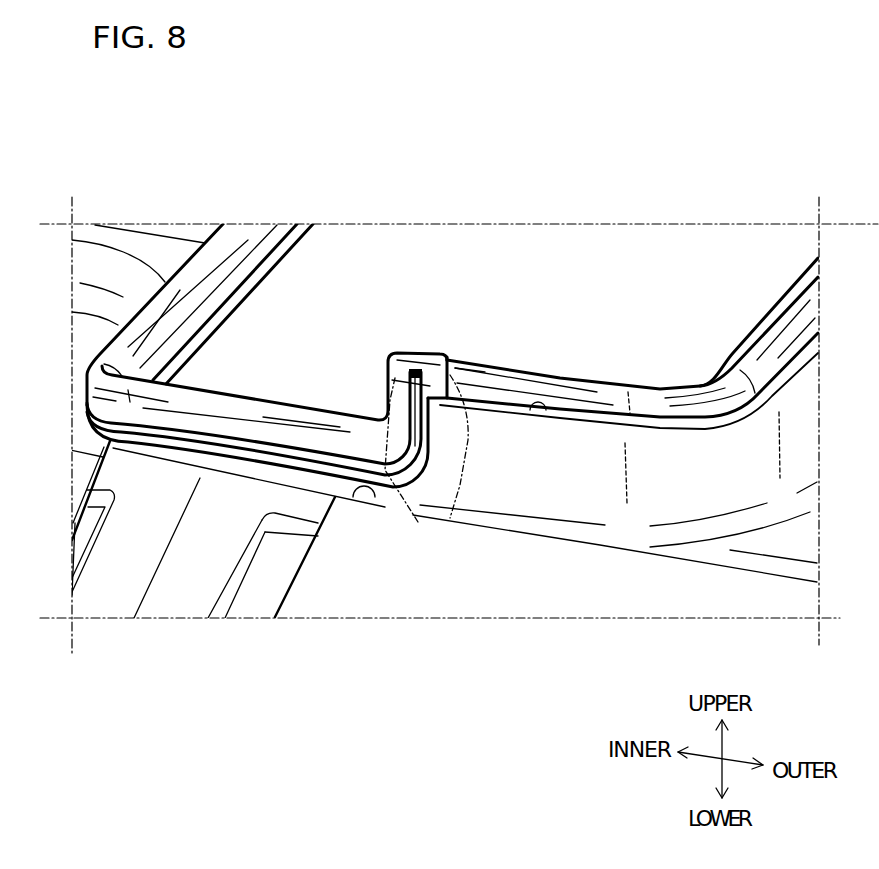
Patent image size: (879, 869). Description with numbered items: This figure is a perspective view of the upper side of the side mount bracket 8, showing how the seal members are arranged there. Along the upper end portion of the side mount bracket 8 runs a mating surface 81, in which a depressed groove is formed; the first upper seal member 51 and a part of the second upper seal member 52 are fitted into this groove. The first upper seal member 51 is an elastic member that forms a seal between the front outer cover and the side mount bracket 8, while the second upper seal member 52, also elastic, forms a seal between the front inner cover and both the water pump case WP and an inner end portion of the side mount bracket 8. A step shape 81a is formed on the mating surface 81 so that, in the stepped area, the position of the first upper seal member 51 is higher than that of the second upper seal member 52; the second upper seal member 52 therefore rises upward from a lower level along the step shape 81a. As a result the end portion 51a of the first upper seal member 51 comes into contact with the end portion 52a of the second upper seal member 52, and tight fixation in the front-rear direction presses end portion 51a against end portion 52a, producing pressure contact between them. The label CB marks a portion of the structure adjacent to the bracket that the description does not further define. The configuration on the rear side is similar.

The side mount bracket 8 is at (592, 597).
The mating surface 81 is at (377, 492).
The step shape 81a is at (418, 522).
The first upper seal member 51 is at (530, 377).
The end portion of the first upper seal member 51a is at (452, 355).
The second upper seal member 52 is at (289, 412).
The end portion of the second upper seal member 52a is at (443, 352).
The center body CB is at (85, 470).
The water pump case WP is at (193, 600).